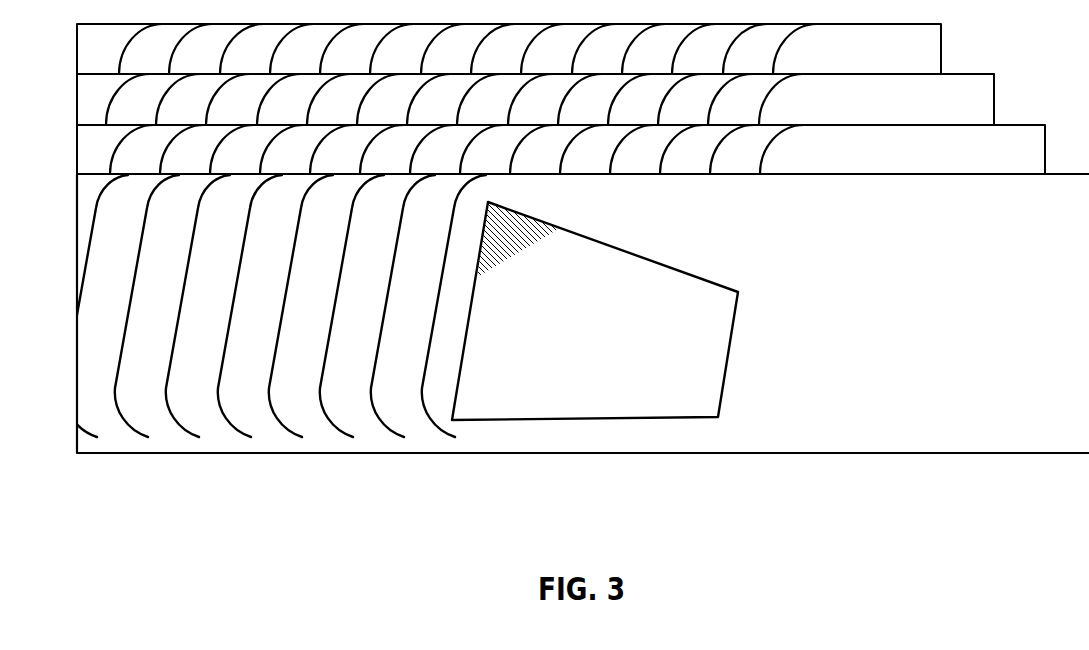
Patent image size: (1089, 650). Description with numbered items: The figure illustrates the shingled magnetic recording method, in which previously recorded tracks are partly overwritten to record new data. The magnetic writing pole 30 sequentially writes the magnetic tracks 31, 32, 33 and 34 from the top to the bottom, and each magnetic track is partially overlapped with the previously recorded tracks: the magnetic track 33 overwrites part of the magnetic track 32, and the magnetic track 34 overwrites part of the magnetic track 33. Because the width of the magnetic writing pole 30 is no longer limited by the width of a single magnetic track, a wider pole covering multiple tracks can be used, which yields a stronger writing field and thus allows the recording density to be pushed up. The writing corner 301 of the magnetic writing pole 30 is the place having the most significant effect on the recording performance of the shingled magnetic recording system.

The magnetic writing pole 30 is at (738, 354).
The writing corner 301 is at (530, 231).
The magnetic track 31 is at (509, 49).
The magnetic track 32 is at (535, 99).
The magnetic track 33 is at (561, 149).
The magnetic track 34 is at (576, 313).